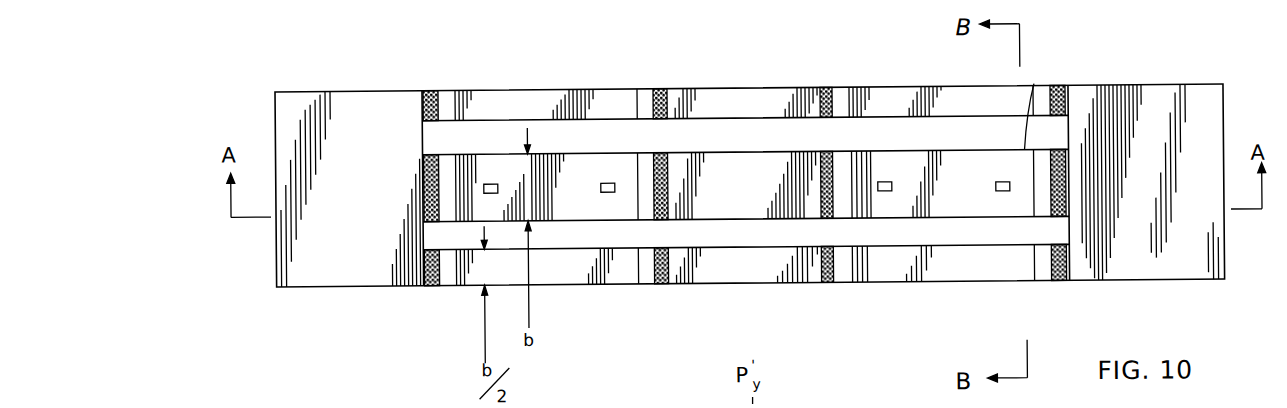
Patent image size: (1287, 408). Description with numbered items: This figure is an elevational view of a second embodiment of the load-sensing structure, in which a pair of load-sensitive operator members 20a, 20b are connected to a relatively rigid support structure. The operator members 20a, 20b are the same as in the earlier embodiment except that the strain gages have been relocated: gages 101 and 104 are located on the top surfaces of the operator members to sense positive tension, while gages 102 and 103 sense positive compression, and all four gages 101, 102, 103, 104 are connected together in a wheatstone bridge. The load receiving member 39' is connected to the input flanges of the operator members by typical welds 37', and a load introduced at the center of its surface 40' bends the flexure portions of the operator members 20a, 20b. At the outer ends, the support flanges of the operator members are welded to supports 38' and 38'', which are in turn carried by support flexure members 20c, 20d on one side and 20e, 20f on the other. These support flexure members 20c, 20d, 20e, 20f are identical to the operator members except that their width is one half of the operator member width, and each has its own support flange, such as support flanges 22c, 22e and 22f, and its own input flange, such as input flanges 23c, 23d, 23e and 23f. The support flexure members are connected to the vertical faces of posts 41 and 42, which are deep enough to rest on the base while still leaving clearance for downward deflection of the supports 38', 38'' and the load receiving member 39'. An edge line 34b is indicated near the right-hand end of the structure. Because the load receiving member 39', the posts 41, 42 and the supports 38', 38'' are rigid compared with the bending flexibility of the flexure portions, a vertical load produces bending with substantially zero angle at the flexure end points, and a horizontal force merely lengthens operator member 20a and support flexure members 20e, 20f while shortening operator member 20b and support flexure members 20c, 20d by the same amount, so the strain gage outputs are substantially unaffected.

The support 38' is at (350, 213).
The typical welds 37' is at (409, 159).
The support flange 22c is at (442, 287).
The input flange 23d is at (653, 93).
The input flange 23c is at (641, 287).
The support flexure member 20d is at (564, 93).
The operator member 20a is at (620, 198).
The support flexure member 20c is at (578, 287).
The strain gage 101 is at (488, 186).
The strain gage 102 is at (606, 186).
The strain gage 103 is at (884, 190).
The strain gage 104 is at (1002, 190).
The post 42 is at (732, 105).
The post 41 is at (740, 268).
The load receiving member 39' is at (748, 151).
The surface 40' is at (717, 222).
The input flange 23f is at (849, 100).
The input flange 23e is at (841, 287).
The support flexure member 20f is at (945, 104).
The operator member 20b is at (980, 191).
The support flexure member 20e is at (951, 287).
The boundary wall 34b is at (1034, 90).
The support flange 22f is at (1052, 99).
The support flange 22e is at (1052, 287).
The support 38'' is at (1155, 210).